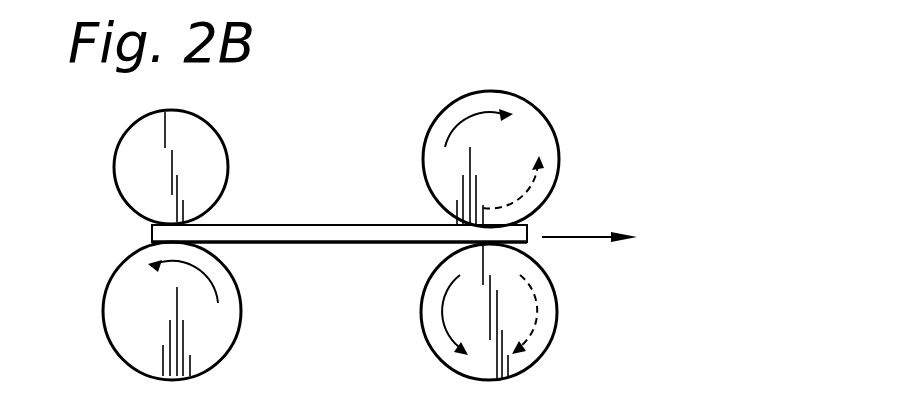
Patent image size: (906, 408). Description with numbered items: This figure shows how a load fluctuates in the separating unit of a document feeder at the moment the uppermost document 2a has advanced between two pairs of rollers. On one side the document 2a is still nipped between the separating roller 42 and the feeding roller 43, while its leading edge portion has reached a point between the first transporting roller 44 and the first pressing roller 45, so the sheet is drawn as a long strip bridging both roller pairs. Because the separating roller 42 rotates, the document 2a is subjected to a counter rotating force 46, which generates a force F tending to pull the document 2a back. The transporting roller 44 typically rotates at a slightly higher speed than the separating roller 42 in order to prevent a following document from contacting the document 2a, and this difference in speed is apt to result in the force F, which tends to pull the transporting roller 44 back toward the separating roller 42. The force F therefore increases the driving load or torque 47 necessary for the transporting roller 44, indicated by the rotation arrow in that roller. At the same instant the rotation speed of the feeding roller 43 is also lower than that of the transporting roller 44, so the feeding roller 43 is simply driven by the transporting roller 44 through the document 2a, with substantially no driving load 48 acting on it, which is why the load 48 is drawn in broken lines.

The uppermost document 2a is at (247, 225).
The separating roller 42 is at (558, 323).
The feeding roller 43 is at (555, 132).
The first transporting roller 44 is at (103, 322).
The first pressing roller 45 is at (215, 132).
The counter rotating force 46 is at (545, 293).
The driving load or torque 47 is at (213, 288).
The driving load 48 is at (541, 207).
The force F is at (589, 224).